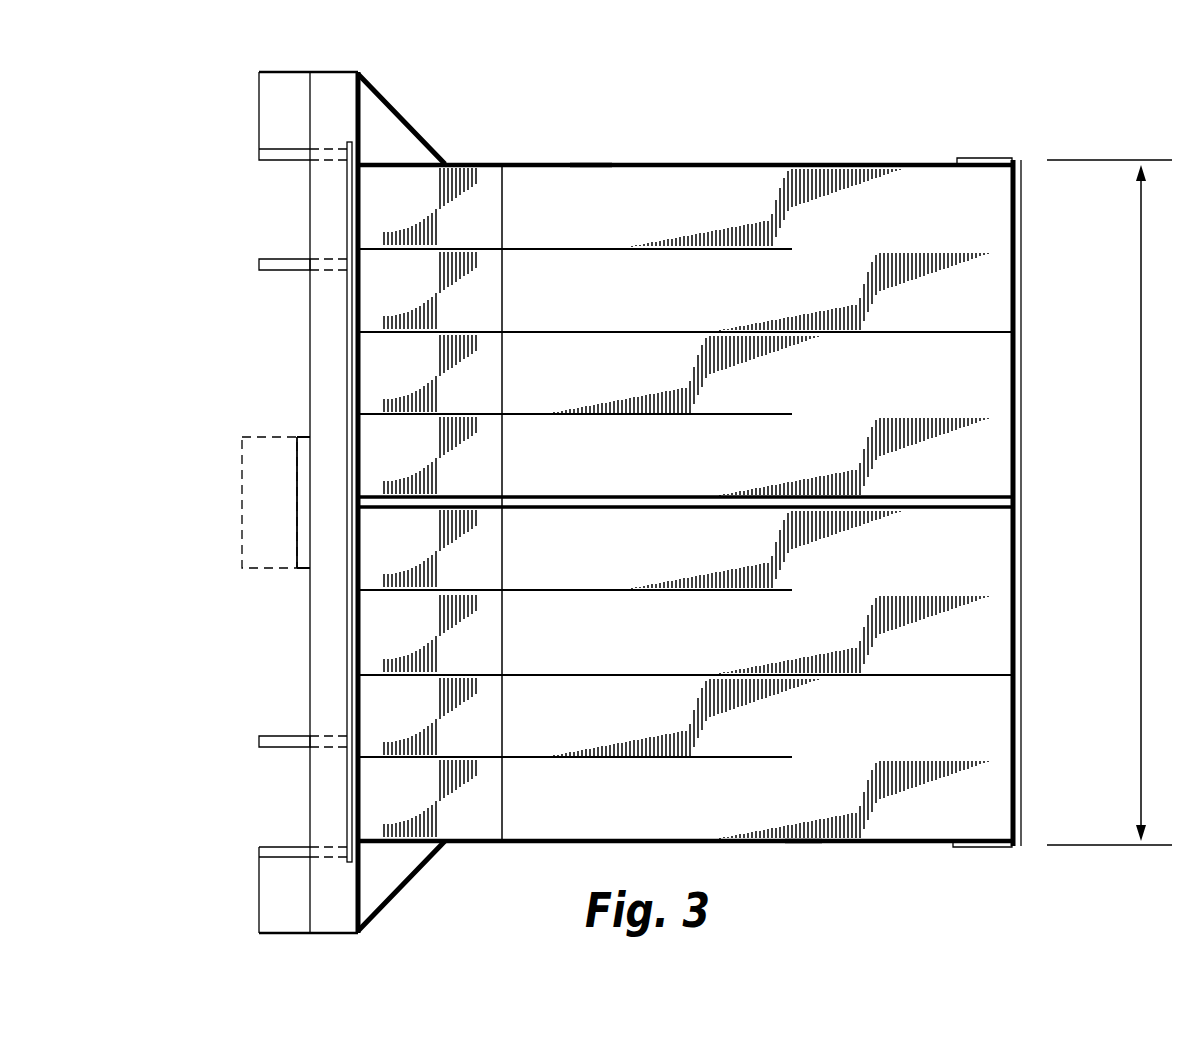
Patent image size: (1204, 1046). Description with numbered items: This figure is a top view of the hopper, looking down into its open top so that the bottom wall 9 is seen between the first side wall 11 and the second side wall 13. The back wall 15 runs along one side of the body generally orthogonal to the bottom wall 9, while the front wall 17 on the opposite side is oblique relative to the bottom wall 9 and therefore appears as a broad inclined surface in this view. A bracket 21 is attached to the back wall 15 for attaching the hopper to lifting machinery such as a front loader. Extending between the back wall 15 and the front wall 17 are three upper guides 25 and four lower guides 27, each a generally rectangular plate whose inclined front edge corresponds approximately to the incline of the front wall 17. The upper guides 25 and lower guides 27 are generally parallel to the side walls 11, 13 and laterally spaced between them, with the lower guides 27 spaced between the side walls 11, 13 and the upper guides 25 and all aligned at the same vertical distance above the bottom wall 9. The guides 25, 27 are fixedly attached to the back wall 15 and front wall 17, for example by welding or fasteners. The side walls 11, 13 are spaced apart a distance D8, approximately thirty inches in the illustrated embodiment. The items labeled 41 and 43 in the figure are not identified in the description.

The bottom wall 9 is at (462, 830).
The first side wall 11 is at (870, 846).
The second side wall 13 is at (718, 164).
The back wall 15 is at (352, 443).
The front wall 17 is at (970, 732).
The bracket 21 is at (322, 660).
The upper guides 25 is at (994, 331).
The lower guides 27 is at (772, 222).
The outlet direction 41 is at (803, 855).
The flow direction 43 is at (591, 152).
The distance between side walls D8 is at (1142, 358).